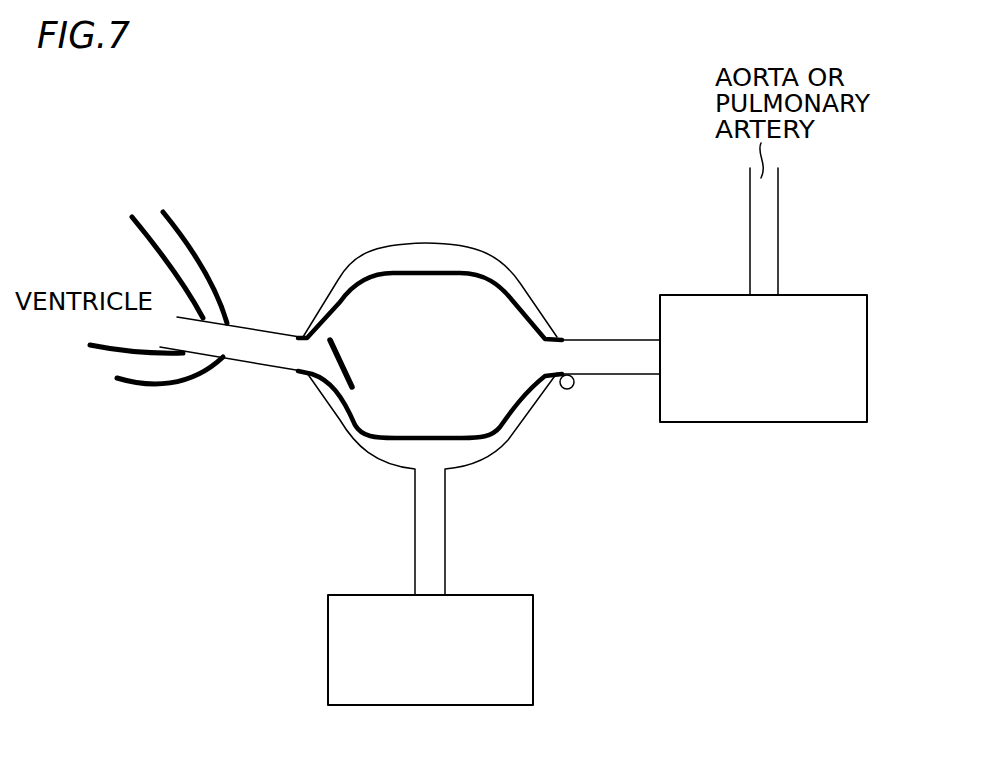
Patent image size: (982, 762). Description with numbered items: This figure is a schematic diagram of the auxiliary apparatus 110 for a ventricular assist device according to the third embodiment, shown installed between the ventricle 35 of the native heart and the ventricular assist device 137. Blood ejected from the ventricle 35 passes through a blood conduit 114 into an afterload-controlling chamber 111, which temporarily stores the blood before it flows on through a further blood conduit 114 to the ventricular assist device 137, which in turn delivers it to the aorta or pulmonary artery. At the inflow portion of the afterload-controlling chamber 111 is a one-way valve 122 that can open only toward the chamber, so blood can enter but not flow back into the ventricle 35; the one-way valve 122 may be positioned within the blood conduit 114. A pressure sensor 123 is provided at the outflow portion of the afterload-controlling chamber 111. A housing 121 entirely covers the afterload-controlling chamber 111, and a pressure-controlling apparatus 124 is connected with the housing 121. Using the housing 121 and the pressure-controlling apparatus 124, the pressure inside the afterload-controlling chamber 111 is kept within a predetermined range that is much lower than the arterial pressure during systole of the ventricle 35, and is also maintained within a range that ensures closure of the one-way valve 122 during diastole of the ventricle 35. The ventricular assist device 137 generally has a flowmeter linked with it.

The ventricle 35 is at (178, 272).
The auxiliary apparatus 110 is at (441, 367).
The afterload-controlling chamber 111 is at (487, 273).
The blood conduit 114 is at (259, 367).
The housing 121 is at (372, 250).
The one-way valve 122 is at (346, 358).
The pressure sensor 123 is at (566, 389).
The pressure-controlling apparatus 124 is at (512, 594).
The ventricular assist device 137 is at (820, 294).